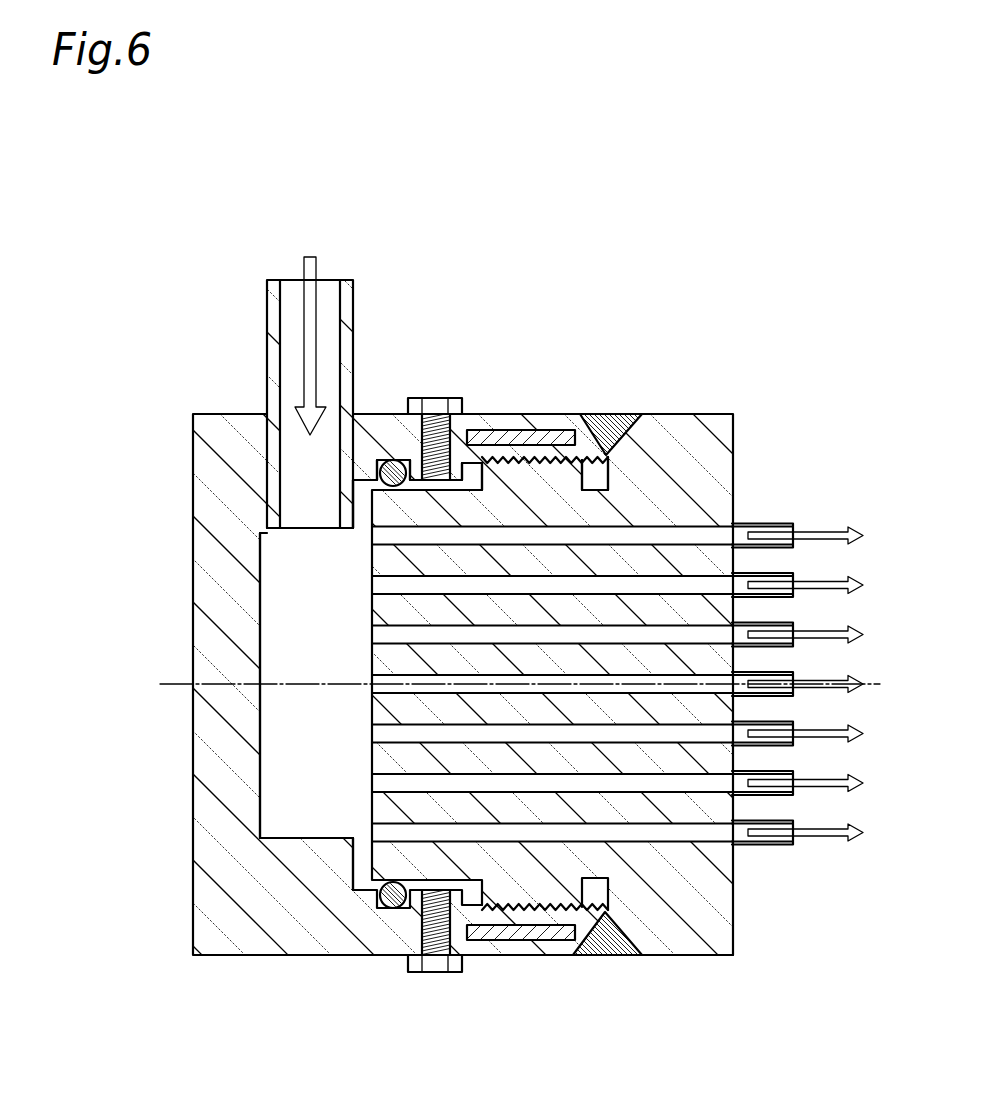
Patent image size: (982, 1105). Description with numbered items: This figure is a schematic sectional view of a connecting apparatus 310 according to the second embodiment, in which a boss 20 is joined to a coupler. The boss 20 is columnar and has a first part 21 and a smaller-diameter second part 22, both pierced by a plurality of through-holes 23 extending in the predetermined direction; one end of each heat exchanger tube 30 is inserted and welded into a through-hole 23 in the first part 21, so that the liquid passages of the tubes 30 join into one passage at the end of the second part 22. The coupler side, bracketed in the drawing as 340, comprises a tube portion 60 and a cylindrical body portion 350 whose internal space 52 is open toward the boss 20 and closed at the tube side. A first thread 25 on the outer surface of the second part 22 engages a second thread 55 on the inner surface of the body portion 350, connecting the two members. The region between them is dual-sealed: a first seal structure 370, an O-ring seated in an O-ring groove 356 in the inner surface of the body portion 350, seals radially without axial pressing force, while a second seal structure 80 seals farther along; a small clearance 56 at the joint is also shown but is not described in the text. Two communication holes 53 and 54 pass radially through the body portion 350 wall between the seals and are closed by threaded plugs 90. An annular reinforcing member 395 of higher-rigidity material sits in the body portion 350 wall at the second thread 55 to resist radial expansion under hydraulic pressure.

The connecting apparatus 310 is at (713, 277).
The supply tube assembly 340 is at (156, 260).
The tube portion 60 is at (267, 316).
The body portion 350 is at (232, 414).
The O-ring groove 356 is at (377, 462).
The first seal structure 370 is at (392, 466).
The threaded plug 90 is at (438, 398).
The communication hole 53 is at (442, 432).
The gap 56 is at (472, 470).
The second thread 55 is at (540, 460).
The reinforcing member 395 is at (547, 445).
The second part 22 is at (572, 480).
The second seal structure 80 is at (624, 413).
The first part 21 is at (703, 408).
The boss 20 is at (777, 379).
The first thread 25 is at (538, 463).
The heat exchanger tube 30 is at (770, 844).
The through-hole 23 is at (647, 816).
The internal space 52 is at (290, 822).
The communication hole 54 is at (457, 940).